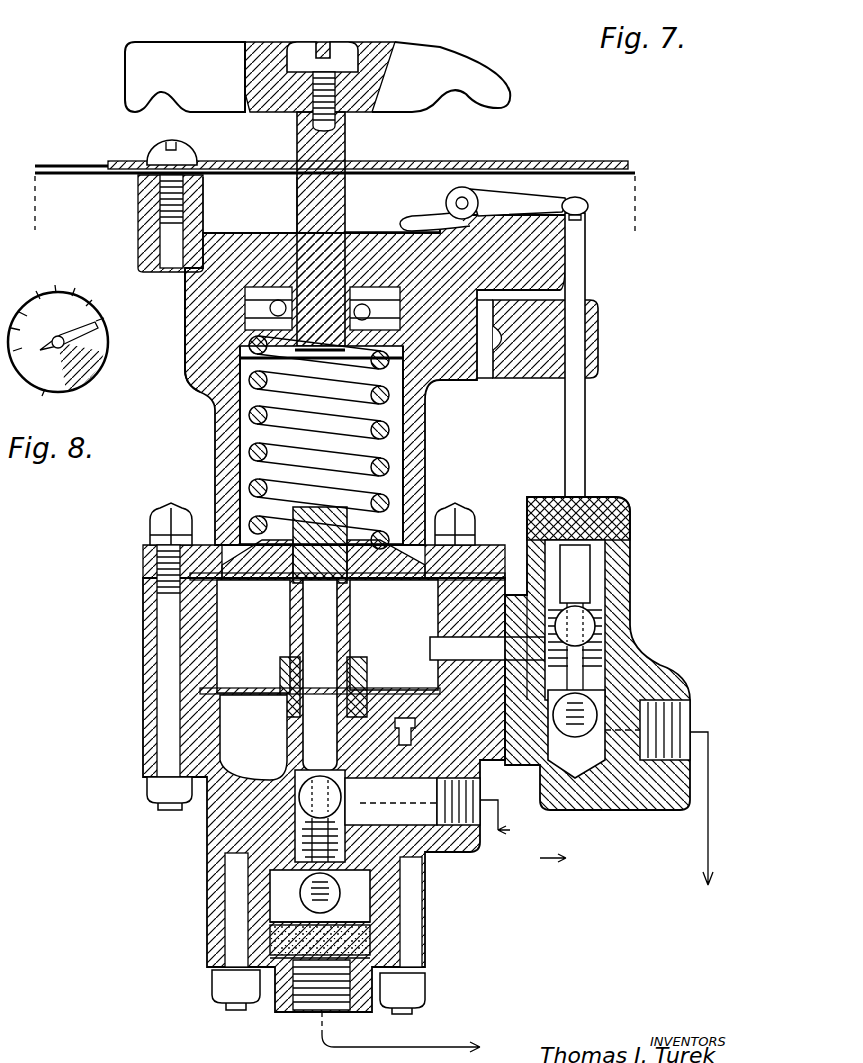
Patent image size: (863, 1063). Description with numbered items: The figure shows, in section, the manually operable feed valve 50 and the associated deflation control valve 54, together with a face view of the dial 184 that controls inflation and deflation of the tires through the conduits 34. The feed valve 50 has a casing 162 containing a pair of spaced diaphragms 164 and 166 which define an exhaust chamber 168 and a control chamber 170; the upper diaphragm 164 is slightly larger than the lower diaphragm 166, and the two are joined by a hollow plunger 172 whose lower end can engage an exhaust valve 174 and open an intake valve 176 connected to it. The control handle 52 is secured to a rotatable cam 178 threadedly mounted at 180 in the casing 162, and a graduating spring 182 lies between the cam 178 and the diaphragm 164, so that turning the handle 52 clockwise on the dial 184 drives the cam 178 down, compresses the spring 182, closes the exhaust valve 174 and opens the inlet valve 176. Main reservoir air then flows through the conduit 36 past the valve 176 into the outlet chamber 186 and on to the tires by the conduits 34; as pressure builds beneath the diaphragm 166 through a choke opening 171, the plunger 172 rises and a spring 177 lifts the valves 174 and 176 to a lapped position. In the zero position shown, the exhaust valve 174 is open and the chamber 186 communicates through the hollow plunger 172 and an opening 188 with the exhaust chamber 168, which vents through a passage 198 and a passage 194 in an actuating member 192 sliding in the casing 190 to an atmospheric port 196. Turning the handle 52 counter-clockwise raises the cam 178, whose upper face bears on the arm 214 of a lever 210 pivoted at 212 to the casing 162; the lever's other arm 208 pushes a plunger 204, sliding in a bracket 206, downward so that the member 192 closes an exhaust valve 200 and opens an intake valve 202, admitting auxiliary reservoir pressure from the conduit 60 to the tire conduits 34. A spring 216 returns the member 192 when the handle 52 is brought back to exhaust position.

In FIG. 7, the conduits 34 is at (501, 825).
In FIG. 7, the conduit 36 is at (414, 1047).
In FIG. 7, the feed valve 50 is at (92, 141).
In FIG. 7, the control handle 52 is at (380, 47).
In FIG. 8, the control handle 52 is at (100, 347).
In FIG. 7, the deflation control valve 54 is at (641, 530).
In FIG. 7, the conduit 60 is at (709, 832).
In FIG. 7, the casing 162 is at (228, 440).
In FIG. 7, the upper diaphragm 164 is at (252, 582).
In FIG. 7, the lower diaphragm 166 is at (248, 688).
In FIG. 7, the exhaust chamber 168 is at (400, 633).
In FIG. 7, the control chamber 170 is at (262, 721).
In FIG. 7, the choke opening 171 is at (400, 718).
In FIG. 7, the hollow plunger 172 is at (296, 622).
In FIG. 7, the exhaust valve 174 is at (341, 798).
In FIG. 7, the intake valve 176 is at (340, 893).
In FIG. 7, the spring 177 is at (303, 826).
In FIG. 7, the rotatable cam 178 is at (272, 236).
In FIG. 7, the threaded mounting 180 is at (195, 282).
In FIG. 7, the graduating spring 182 is at (248, 382).
In FIG. 7, the dial 184 is at (512, 160).
In FIG. 8, the dial 184 is at (100, 333).
In FIG. 7, the inlet chamber 186 is at (346, 822).
In FIG. 7, the opening 188 is at (347, 612).
In FIG. 7, the casing 190 is at (624, 507).
In FIG. 7, the actuating member 192 is at (596, 500).
In FIG. 7, the passage 194 is at (592, 560).
In FIG. 7, the atmospheric port 196 is at (606, 578).
In FIG. 7, the passage 198 is at (490, 661).
In FIG. 7, the exhaust valve 200 is at (592, 611).
In FIG. 7, the intake valve 202 is at (576, 734).
In FIG. 7, the plunger 204 is at (586, 427).
In FIG. 7, the bracket 206 is at (599, 328).
In FIG. 7, the arm 208 is at (580, 207).
In FIG. 7, the lever 210 is at (506, 224).
In FIG. 7, the pivotal mounting 212 is at (458, 201).
In FIG. 7, the arm 214 is at (405, 220).
In FIG. 7, the spring 216 is at (606, 636).